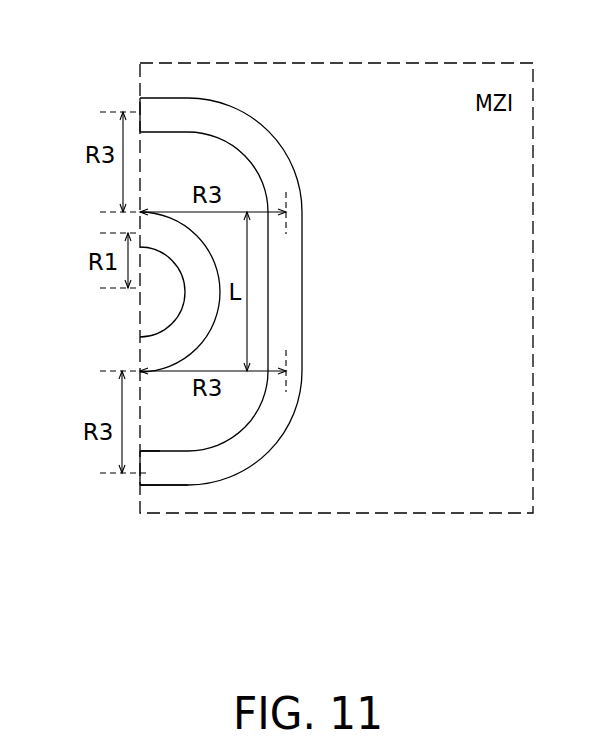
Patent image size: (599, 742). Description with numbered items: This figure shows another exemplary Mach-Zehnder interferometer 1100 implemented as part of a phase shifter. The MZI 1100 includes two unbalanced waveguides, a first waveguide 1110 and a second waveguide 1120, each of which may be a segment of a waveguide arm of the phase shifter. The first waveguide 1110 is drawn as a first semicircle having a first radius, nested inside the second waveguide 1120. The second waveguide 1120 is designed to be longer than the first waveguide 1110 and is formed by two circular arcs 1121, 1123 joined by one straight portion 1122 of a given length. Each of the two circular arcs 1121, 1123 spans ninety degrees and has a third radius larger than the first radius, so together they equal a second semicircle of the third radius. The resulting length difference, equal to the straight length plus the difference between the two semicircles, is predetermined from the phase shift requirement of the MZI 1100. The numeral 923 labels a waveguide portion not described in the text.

The Mach-Zehnder interferometer 1100 is at (465, 63).
The first waveguide 1110 is at (140, 354).
The second waveguide 1120 is at (150, 473).
The circular arc 1121 is at (250, 138).
The straight portion 1122 is at (292, 287).
The circular arc 1123 is at (252, 450).
The waveguide 923 is at (185, 475).